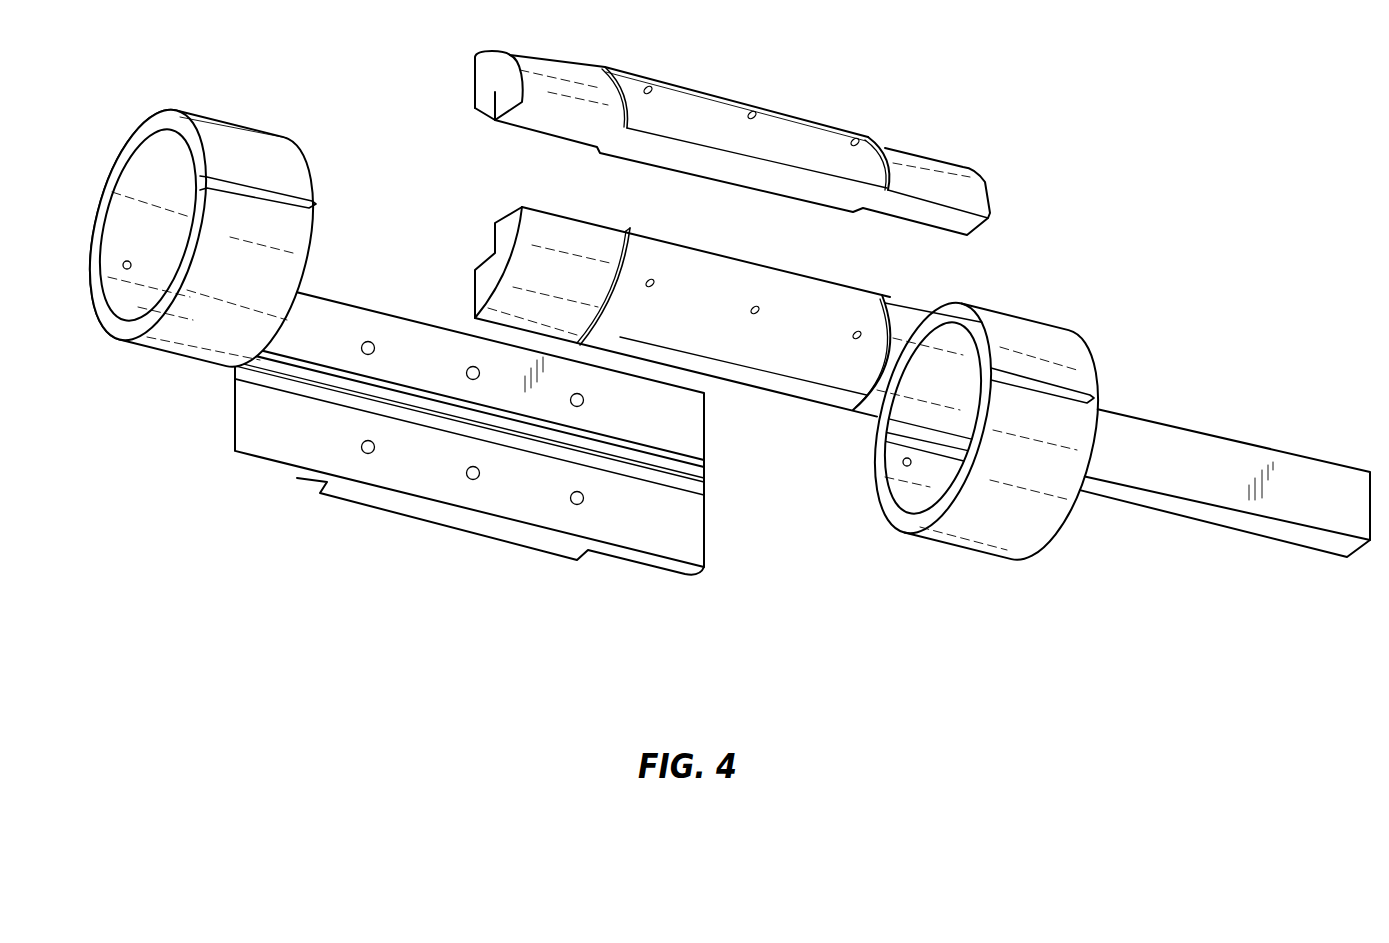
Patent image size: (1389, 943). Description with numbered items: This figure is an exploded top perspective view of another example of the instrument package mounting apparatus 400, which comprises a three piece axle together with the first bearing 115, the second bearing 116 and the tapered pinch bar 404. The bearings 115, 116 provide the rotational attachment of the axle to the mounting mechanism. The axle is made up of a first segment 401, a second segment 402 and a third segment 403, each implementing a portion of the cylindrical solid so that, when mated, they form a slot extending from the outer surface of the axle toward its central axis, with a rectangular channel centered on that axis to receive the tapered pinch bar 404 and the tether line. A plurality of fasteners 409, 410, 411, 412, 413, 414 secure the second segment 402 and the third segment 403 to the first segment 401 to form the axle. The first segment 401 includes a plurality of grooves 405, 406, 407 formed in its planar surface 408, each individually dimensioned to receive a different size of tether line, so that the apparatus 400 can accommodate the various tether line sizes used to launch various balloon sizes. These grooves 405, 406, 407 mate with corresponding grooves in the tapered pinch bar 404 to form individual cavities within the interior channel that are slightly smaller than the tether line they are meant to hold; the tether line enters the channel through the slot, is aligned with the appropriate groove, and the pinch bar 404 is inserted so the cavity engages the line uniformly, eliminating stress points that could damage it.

The instrument package mounting apparatus 400 is at (1156, 163).
The first segment 401 is at (508, 441).
The second segment 402 is at (728, 343).
The third segment 403 is at (732, 139).
The tapered pinch bar 404 is at (1282, 530).
The groove 405 is at (704, 495).
The groove 406 is at (705, 479).
The groove 407 is at (705, 460).
The planar surface 408 is at (266, 437).
The fastener 409 is at (653, 292).
The fastener 410 is at (758, 316).
The fastener 411 is at (853, 342).
The fastener 412 is at (649, 84).
The fastener 413 is at (761, 108).
The fastener 414 is at (855, 136).
The first bearing 115 is at (988, 536).
The second bearing 116 is at (171, 344).